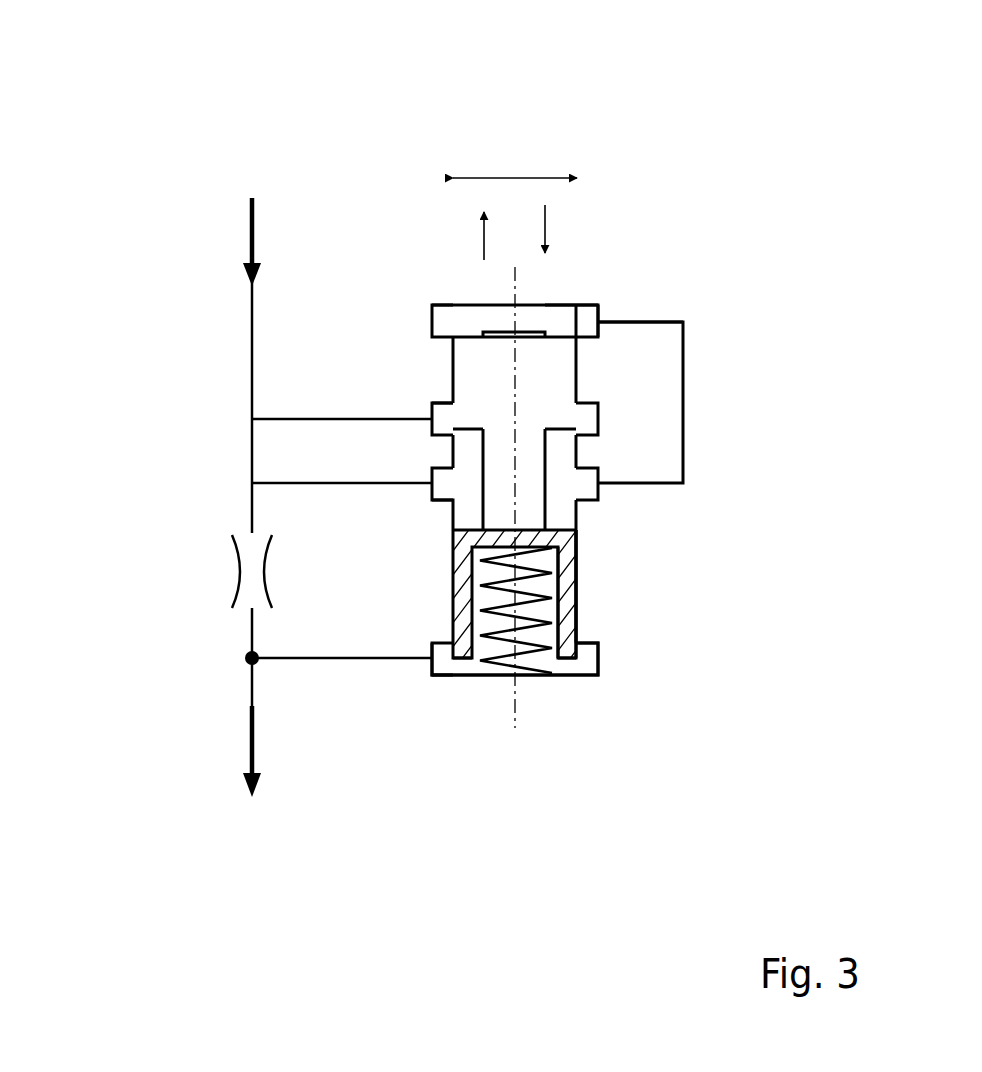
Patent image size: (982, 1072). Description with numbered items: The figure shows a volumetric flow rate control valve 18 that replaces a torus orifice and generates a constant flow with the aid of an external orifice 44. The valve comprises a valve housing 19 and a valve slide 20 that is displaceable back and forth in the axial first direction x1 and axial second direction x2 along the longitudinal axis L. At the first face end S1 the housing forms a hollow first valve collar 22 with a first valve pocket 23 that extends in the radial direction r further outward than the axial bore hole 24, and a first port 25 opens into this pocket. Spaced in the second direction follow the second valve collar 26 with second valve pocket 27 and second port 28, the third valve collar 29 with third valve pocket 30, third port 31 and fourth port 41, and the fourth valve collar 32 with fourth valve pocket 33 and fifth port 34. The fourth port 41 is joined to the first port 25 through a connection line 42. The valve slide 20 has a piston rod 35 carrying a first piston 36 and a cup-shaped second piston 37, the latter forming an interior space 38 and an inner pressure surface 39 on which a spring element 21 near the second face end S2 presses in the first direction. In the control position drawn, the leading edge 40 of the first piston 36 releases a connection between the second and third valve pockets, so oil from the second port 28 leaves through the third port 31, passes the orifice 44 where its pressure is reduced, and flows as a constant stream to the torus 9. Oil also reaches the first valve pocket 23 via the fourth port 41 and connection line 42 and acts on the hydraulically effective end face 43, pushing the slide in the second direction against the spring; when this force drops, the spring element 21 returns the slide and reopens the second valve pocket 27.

The torus 9 is at (250, 723).
The volumetric flow rate control valve 18 is at (613, 594).
The valve housing 19 is at (577, 323).
The valve slide 20 is at (677, 542).
The spring element 21 is at (545, 658).
The first valve collar 22 is at (598, 312).
The first valve pocket 23 is at (598, 305).
The axial bore hole 24 is at (445, 325).
The first port 25 is at (598, 319).
The second valve collar 26 is at (443, 413).
The second valve pocket 27 is at (432, 403).
The second port 28 is at (432, 419).
The third valve collar 29 is at (432, 468).
The third valve pocket 30 is at (448, 485).
The third port 31 is at (432, 484).
The fourth valve collar 32 is at (440, 645).
The fourth valve pocket 33 is at (457, 663).
The fifth port 34 is at (432, 660).
The piston rod 35 is at (528, 460).
The first piston 36 is at (543, 373).
The second piston 37 is at (563, 577).
The interior space 38 is at (560, 633).
The inner pressure surface 39 is at (455, 567).
The leading edge 40 is at (578, 428).
The fourth port 41 is at (598, 487).
The connection line 42 is at (683, 434).
The hydraulically effective end face 43 is at (582, 203).
The orifice 44 is at (226, 572).
The longitudinal axis L is at (517, 281).
The radial direction r is at (515, 161).
The axial first direction x1 is at (466, 236).
The axial second direction x2 is at (562, 229).
The first face end S1 is at (450, 284).
The second face end S2 is at (450, 699).